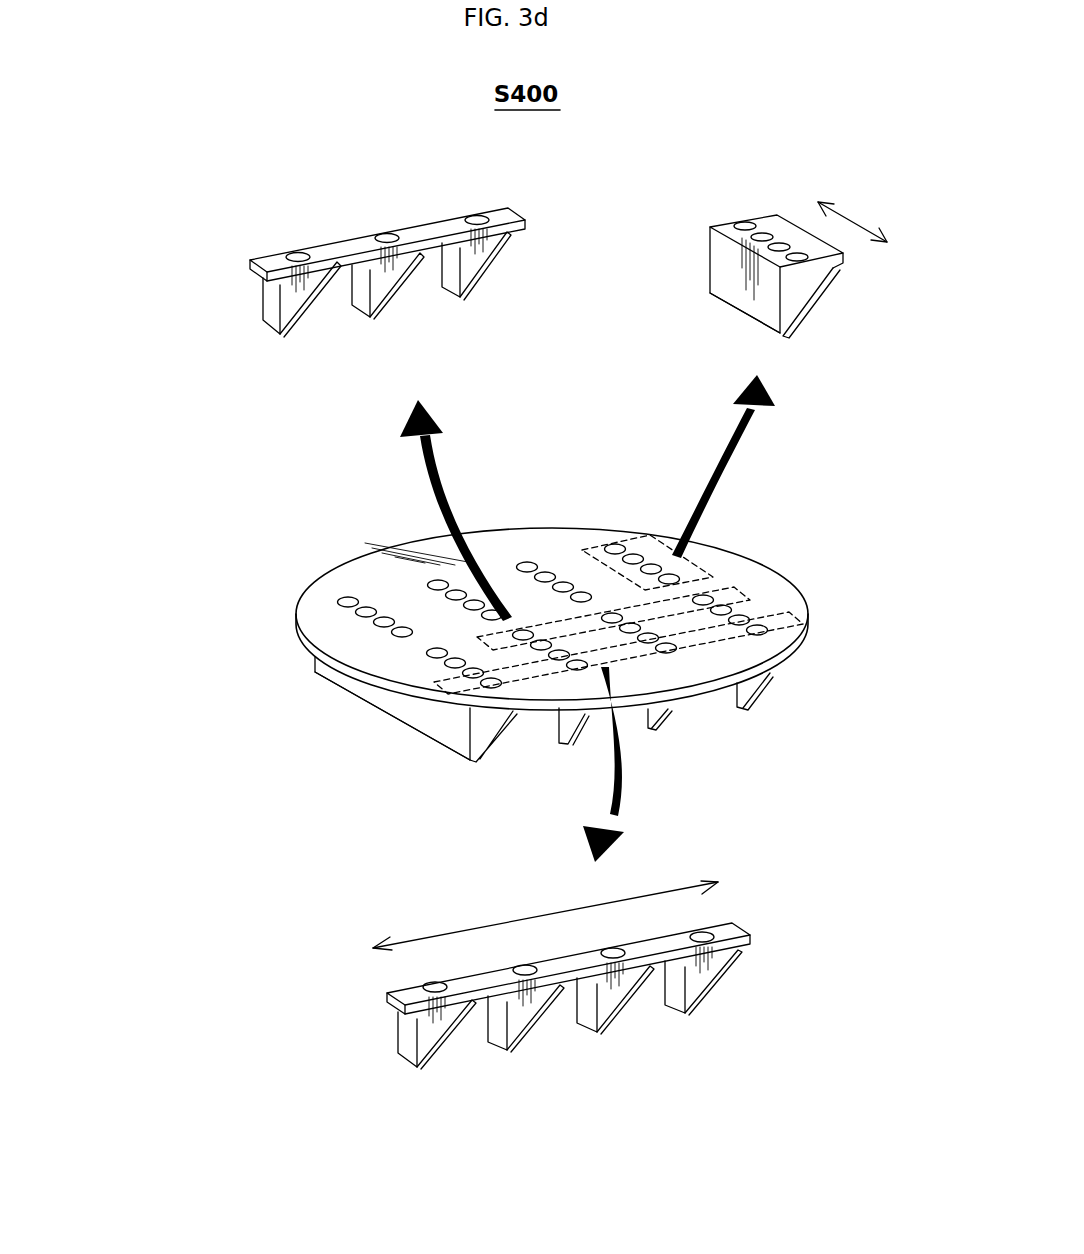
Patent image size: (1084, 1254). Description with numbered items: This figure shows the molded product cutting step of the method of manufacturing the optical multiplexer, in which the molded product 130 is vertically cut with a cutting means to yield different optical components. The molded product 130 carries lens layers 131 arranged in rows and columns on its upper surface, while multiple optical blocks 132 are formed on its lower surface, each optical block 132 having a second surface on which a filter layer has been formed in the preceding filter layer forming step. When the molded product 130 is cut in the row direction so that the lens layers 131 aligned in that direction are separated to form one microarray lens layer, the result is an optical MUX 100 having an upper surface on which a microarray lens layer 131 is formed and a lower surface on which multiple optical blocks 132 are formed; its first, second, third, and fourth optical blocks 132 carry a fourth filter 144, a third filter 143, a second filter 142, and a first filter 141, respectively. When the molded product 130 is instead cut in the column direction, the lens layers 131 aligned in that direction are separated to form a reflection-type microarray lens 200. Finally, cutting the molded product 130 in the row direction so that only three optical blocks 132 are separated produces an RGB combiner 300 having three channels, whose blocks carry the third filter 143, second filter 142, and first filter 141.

The optical MUX 100 is at (375, 1030).
The reflection-type microarray lens 200 is at (688, 282).
The RGB combiner 300 is at (237, 298).
The molded product 130 is at (530, 528).
The lens layer 131 is at (297, 253).
The optical block 132 is at (270, 320).
The first filter 141 is at (487, 270).
The second filter 142 is at (397, 290).
The third filter 143 is at (313, 305).
The fourth filter 144 is at (450, 1030).